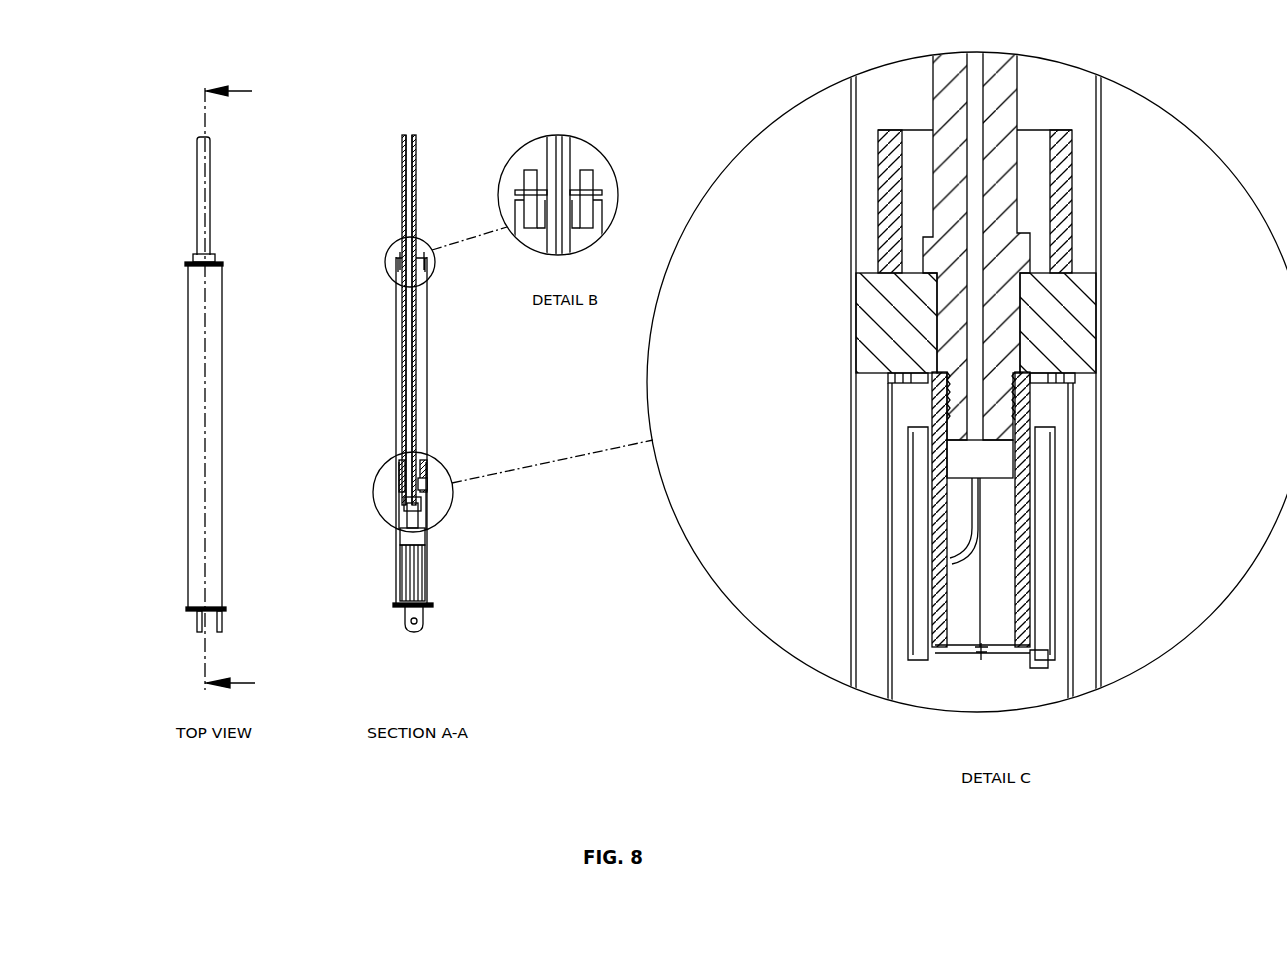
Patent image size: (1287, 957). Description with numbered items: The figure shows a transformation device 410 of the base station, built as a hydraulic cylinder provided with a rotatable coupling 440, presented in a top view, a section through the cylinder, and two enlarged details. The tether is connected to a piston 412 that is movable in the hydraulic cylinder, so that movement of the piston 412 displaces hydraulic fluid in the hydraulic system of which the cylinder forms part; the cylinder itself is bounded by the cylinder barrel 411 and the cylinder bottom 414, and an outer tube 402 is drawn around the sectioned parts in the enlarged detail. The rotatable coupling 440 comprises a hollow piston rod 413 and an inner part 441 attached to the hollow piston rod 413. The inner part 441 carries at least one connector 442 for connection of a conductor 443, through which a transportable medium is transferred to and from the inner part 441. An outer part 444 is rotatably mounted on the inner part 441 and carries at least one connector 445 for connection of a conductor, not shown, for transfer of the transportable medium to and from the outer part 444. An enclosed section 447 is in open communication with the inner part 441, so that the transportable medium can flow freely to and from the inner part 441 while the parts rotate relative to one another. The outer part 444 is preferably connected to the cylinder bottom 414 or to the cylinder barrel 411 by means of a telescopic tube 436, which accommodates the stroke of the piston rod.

The transformation device 410 is at (117, 173).
The cylinder barrel 411 is at (396, 352).
The hollow piston rod 413 is at (1017, 75).
The rotatable coupling 440 is at (353, 492).
The telescopic tube 436 is at (400, 535).
The cylinder bottom 414 is at (430, 609).
The piston 412 is at (890, 340).
The outer tube 402 is at (1101, 155).
The inner part 441 is at (1035, 400).
The enclosed section 447 is at (922, 527).
The connector 442 is at (935, 580).
The conductor 443 is at (950, 562).
The outer part 444 is at (920, 662).
The connector 445 is at (1038, 670).